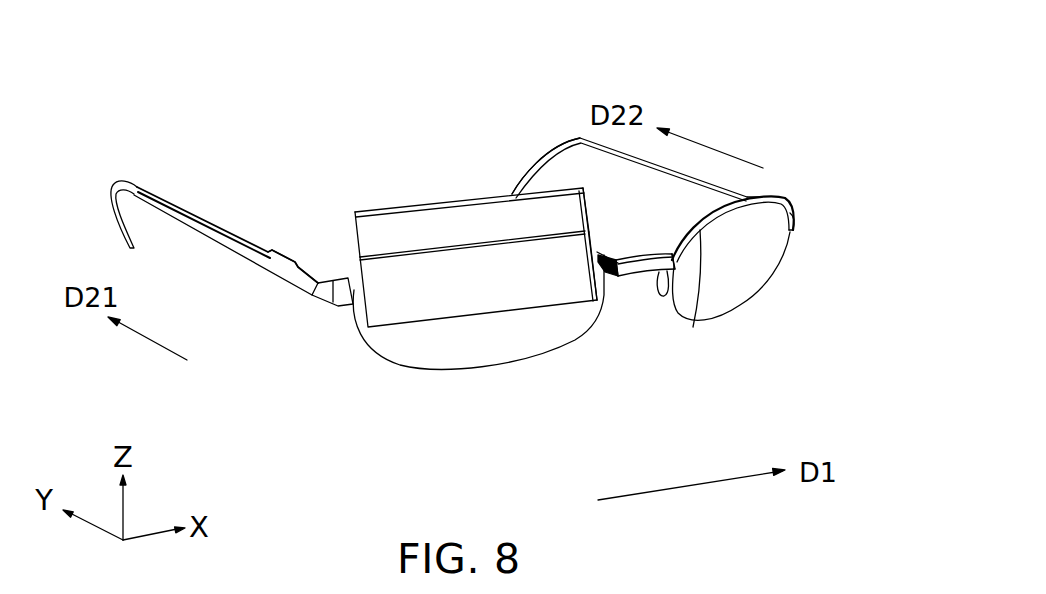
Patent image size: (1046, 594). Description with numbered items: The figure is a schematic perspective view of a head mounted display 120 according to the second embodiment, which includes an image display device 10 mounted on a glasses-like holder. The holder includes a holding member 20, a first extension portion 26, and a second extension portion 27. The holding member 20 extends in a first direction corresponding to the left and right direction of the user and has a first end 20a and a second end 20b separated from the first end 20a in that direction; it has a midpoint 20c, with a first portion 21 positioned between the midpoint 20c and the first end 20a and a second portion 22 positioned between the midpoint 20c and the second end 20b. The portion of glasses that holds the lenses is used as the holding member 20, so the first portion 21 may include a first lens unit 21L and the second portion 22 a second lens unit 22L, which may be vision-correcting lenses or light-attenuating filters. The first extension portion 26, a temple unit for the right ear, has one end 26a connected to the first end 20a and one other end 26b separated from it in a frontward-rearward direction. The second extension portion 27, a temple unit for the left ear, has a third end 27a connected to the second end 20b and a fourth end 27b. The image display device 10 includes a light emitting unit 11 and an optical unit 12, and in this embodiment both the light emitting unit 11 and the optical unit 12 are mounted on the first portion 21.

The head mounted display 120 is at (812, 94).
The image display device 10 is at (476, 331).
The light emitting unit 11 is at (417, 232).
The optical unit 12 is at (468, 293).
The holding member 20 is at (490, 281).
The first end 20a is at (332, 290).
The second end 20b is at (794, 231).
The midpoint 20c is at (640, 269).
The first portion 21 is at (455, 349).
The first lens unit 21L is at (517, 337).
The second portion 22 is at (771, 307).
The second lens unit 22L is at (732, 283).
The first extension portion 26 is at (182, 232).
The one end 26a is at (318, 288).
The one other end 26b is at (130, 248).
The second extension portion 27 is at (677, 163).
The third end 27a is at (794, 226).
The fourth end 27b is at (512, 192).